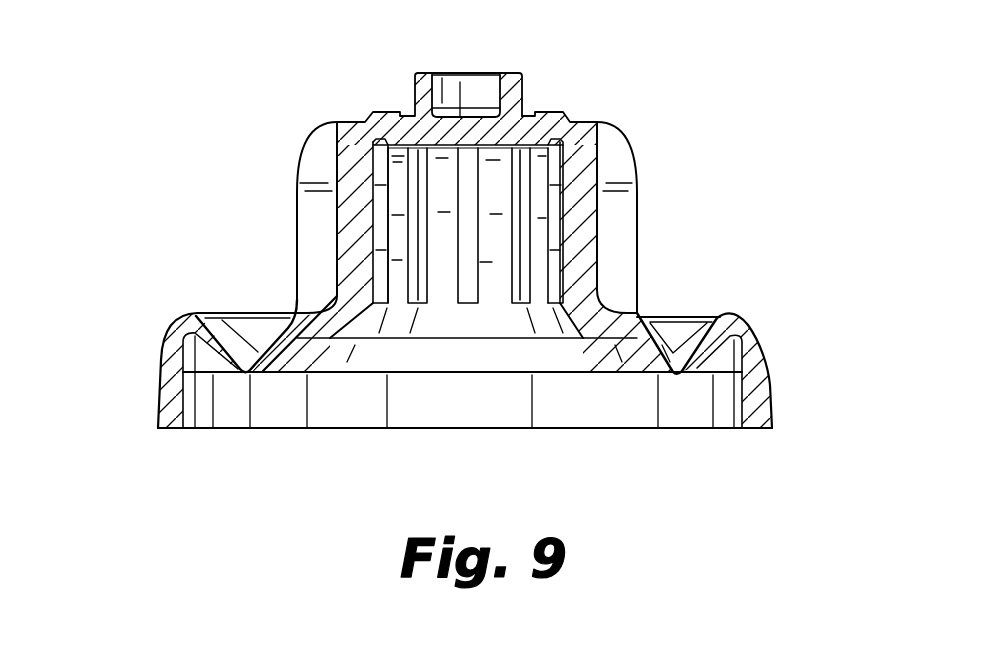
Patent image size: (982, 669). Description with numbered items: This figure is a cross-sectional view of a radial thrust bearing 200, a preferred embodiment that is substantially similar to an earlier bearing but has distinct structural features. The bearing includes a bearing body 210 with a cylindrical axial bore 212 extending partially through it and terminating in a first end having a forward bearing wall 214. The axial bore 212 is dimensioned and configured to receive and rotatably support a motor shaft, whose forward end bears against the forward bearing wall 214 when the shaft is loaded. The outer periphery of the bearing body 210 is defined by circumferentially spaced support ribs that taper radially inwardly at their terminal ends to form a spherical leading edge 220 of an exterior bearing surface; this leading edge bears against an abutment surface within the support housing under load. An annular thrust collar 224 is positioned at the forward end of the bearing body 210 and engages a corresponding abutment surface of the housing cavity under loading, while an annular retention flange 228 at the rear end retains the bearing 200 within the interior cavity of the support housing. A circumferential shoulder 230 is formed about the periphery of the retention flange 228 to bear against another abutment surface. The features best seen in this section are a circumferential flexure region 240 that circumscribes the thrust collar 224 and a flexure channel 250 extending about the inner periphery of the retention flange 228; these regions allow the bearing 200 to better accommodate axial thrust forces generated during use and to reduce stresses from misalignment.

The radial thrust bearing 200 is at (728, 163).
The bearing body 210 is at (297, 257).
The cylindrical axial bore 212 is at (564, 231).
The forward bearing wall 214 is at (402, 113).
The spherical leading edge 220 is at (306, 152).
The annular thrust collar 224 is at (524, 84).
The annular retention flange 228 is at (158, 372).
The circumferential shoulder 230 is at (758, 320).
The circumferential flexure region 240 is at (570, 120).
The flexure channel 250 is at (687, 348).